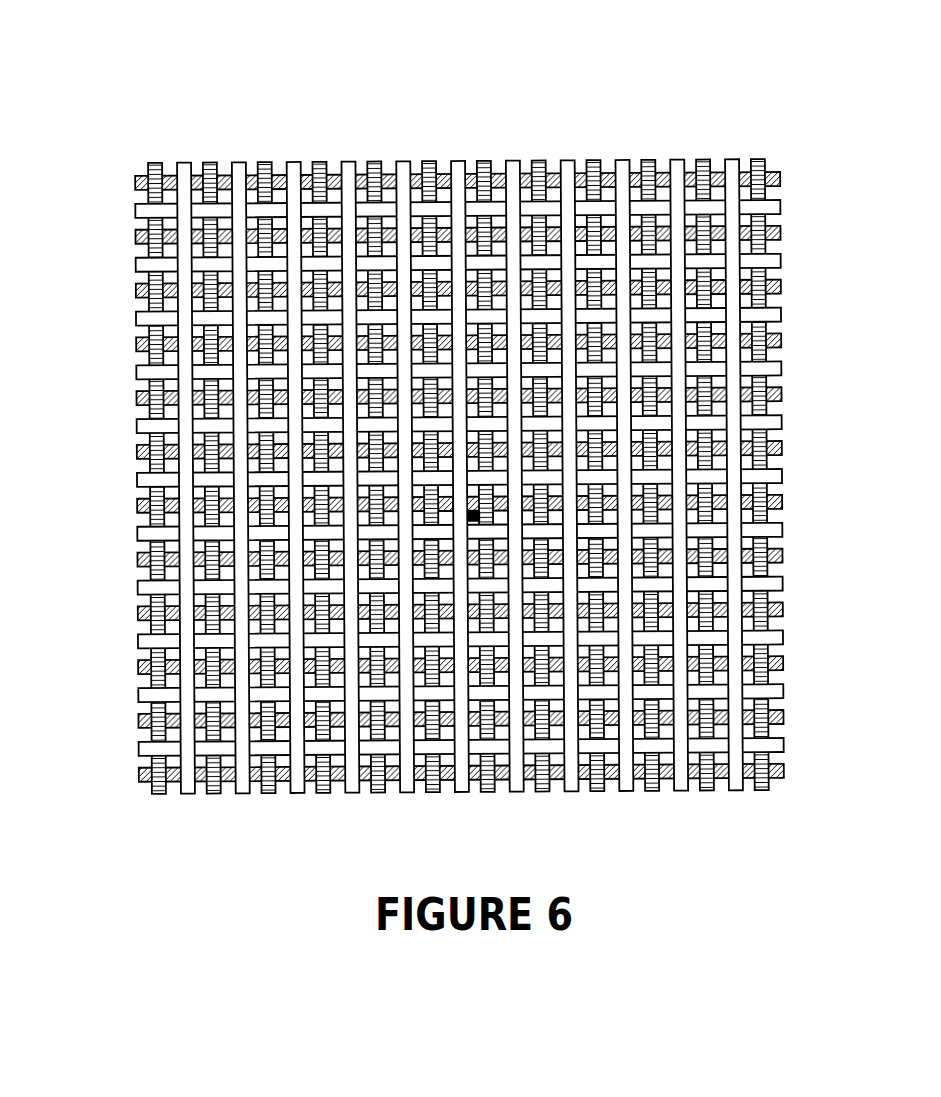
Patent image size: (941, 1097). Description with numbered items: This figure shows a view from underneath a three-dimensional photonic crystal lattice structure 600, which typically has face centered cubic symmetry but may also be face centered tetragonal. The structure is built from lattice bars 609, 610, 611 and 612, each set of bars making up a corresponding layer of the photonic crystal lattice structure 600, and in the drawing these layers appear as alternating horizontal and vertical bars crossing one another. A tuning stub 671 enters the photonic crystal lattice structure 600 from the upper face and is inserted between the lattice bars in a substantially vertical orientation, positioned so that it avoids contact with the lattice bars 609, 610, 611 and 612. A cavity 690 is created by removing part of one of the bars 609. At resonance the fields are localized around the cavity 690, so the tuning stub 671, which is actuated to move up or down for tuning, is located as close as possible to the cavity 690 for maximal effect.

The photonic crystal lattice structure 600 is at (848, 343).
The lattice bars 609 is at (778, 180).
The lattice bars 610 is at (269, 163).
The lattice bars 611 is at (775, 262).
The lattice bars 612 is at (457, 165).
The tuning stub 671 is at (480, 512).
The cavity 690 is at (443, 507).